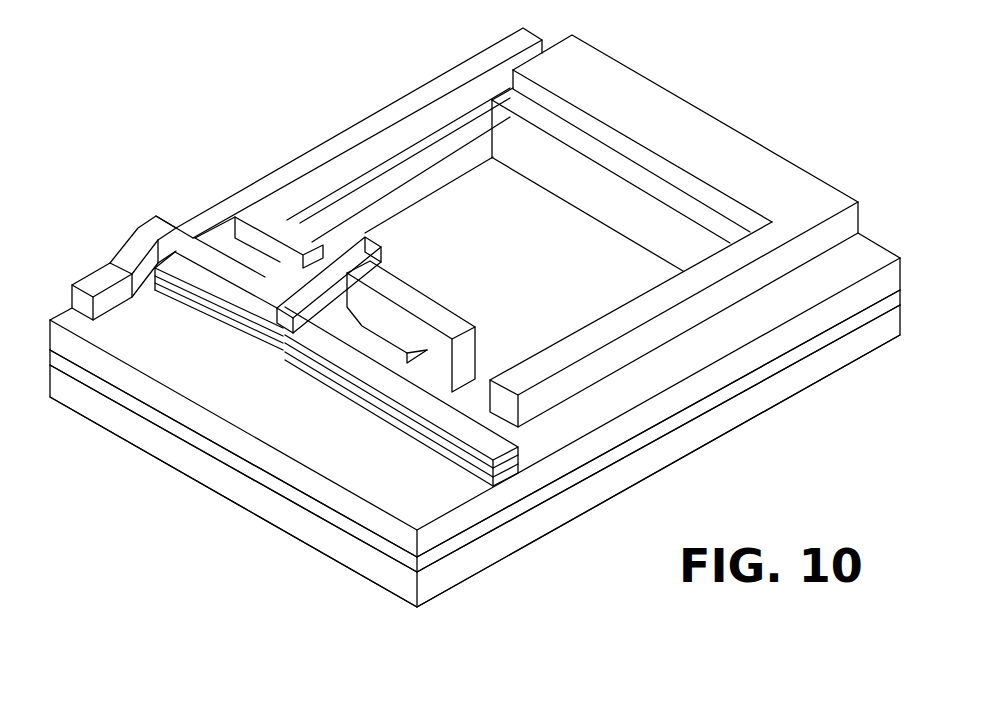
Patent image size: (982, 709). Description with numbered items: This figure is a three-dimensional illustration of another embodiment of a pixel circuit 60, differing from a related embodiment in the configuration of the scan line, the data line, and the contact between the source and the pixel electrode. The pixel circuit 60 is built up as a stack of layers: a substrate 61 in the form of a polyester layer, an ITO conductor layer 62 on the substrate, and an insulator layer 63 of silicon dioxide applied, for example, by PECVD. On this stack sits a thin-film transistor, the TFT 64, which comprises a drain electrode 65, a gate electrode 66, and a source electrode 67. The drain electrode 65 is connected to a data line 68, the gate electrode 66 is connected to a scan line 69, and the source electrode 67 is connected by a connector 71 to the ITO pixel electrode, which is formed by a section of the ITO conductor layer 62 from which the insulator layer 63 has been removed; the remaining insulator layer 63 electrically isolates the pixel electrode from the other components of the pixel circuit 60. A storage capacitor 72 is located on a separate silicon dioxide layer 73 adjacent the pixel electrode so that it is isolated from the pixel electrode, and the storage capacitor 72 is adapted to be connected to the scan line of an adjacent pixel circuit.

The pixel circuit 60 is at (756, 434).
The substrate 61 is at (358, 553).
The ITO conductor layer 62 is at (320, 503).
The insulator layer 63 is at (437, 499).
The TFT 64 is at (392, 237).
The drain electrode 65 is at (278, 272).
The gate electrode 66 is at (385, 256).
The source electrode 67 is at (343, 309).
The data line 68 is at (209, 199).
The scan line 69 is at (278, 296).
The connector 71 is at (457, 331).
The storage capacitor 72 is at (713, 140).
The SiO2 layer 73 is at (628, 304).